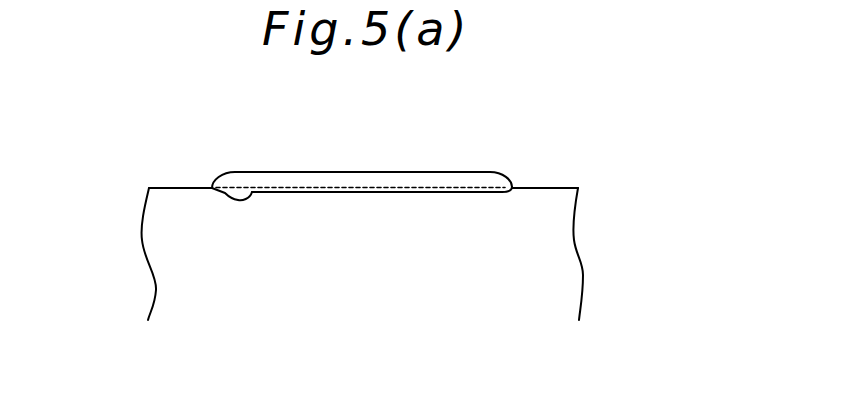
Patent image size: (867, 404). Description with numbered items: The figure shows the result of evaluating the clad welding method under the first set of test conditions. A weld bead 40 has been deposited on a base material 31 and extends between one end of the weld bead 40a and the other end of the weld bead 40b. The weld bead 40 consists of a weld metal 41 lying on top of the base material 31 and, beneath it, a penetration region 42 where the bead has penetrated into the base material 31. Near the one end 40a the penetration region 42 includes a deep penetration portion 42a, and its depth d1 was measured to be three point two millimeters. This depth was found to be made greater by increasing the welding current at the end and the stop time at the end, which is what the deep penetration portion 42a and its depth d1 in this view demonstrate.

The base material 31 is at (589, 265).
The weld bead 40 is at (441, 129).
The weld metal 41 is at (479, 168).
The penetration region 42 is at (492, 196).
The one end of the weld bead 40a is at (212, 188).
The other end of the weld bead 40b is at (514, 188).
The deep penetration portion 42a is at (230, 197).
The depth of the deep penetration portion d1 is at (239, 210).